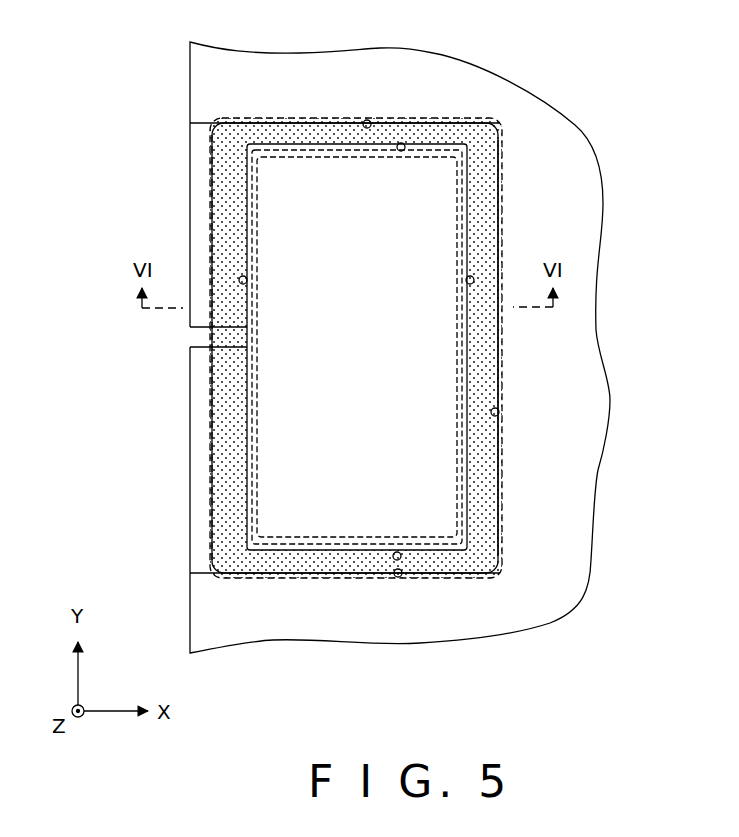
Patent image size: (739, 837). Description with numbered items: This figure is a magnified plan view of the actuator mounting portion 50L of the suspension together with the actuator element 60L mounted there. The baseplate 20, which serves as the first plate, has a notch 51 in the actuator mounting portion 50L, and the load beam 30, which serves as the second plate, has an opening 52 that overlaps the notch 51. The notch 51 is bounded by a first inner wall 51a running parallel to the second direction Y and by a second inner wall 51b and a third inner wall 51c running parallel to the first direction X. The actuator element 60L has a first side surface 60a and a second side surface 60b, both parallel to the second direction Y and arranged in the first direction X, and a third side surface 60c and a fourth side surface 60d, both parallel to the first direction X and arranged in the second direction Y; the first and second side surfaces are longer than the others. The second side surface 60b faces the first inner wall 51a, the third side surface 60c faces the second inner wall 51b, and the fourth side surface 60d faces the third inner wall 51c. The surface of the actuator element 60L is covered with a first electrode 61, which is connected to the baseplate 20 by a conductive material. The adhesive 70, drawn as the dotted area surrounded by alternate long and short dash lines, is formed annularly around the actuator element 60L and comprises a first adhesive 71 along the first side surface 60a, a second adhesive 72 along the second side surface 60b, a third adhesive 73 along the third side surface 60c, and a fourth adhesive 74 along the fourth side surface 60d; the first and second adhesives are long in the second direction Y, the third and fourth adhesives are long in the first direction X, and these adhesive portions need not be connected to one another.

The baseplate 20 is at (257, 632).
The load beam 30 is at (190, 530).
The actuator mounting portion 50L is at (172, 360).
The notch 51 is at (505, 177).
The first inner wall 51a is at (499, 412).
The second inner wall 51b is at (367, 120).
The third inner wall 51c is at (398, 577).
The opening 52 is at (340, 553).
The first side surface 60a is at (247, 280).
The second side surface 60b is at (466, 280).
The third side surface 60c is at (401, 151).
The fourth side surface 60d is at (397, 552).
The actuator element 60L is at (378, 357).
The first electrode 61 is at (272, 435).
The adhesive 70 is at (446, 112).
The first adhesive 71 is at (228, 212).
The second adhesive 72 is at (485, 222).
The third adhesive 73 is at (305, 130).
The fourth adhesive 74 is at (292, 565).